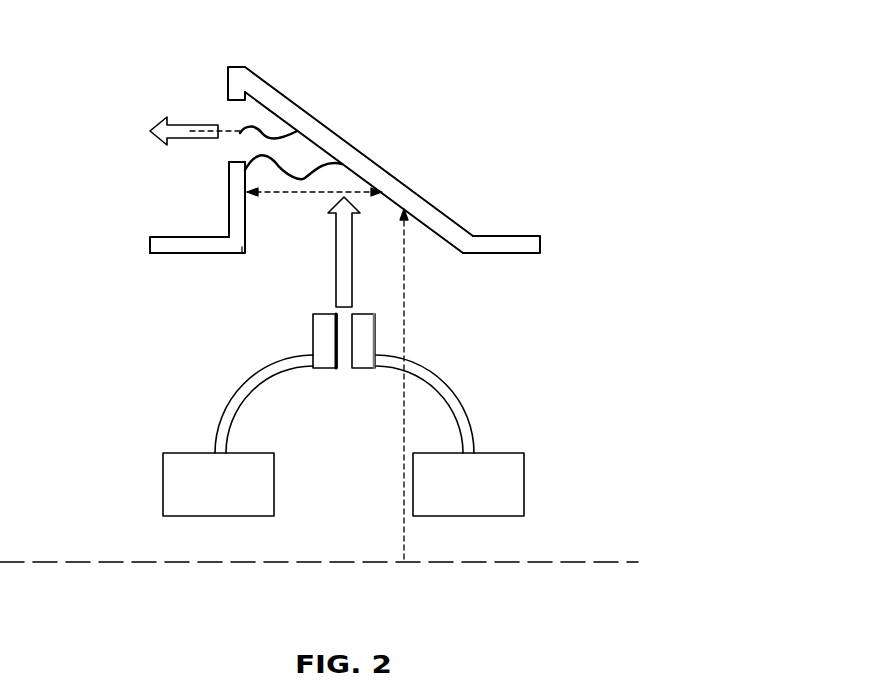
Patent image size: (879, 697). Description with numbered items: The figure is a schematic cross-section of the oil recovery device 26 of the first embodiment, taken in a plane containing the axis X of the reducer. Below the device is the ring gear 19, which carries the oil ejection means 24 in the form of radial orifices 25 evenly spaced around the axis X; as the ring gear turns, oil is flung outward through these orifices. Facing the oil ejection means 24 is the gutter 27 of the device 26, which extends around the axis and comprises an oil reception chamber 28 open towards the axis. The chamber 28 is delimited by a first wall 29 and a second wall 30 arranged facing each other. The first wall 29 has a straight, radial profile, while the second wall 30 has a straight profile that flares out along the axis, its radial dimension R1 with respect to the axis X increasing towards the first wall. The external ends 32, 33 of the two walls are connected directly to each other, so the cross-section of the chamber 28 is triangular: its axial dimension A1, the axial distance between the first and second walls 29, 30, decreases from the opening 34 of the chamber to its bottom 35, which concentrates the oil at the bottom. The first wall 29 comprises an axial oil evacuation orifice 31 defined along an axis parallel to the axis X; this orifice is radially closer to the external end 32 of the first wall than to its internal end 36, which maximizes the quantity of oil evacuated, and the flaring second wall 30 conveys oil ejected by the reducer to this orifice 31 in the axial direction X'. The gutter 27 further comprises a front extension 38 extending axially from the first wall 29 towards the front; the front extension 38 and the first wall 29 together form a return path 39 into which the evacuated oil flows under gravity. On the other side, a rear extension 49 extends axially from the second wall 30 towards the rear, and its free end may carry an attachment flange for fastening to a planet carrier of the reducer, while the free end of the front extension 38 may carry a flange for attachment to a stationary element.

The ring gear 19 is at (480, 420).
The oil ejection means 24 is at (331, 325).
The orifices 25 is at (342, 340).
The oil recovery device 26 is at (419, 160).
The gutter 27 is at (424, 197).
The oil reception chamber 28 is at (288, 158).
The first wall 29 is at (147, 238).
The second wall 30 is at (382, 180).
The axial oil evacuation orifice 31 is at (233, 160).
The external end of the first wall 32 is at (220, 55).
The external end of the second wall 33 is at (237, 72).
The opening of the chamber 34 is at (298, 240).
The bottom of the chamber 35 is at (253, 108).
The internal end of the first wall 36 is at (243, 247).
The front extension 38 is at (202, 242).
The return path 39 is at (228, 200).
The rear extension 49 is at (507, 247).
The axial dimension of the chamber A1 is at (312, 190).
The radial dimension of the second wall R1 is at (404, 322).
The axis X is at (319, 597).
The axial direction X' is at (223, 101).